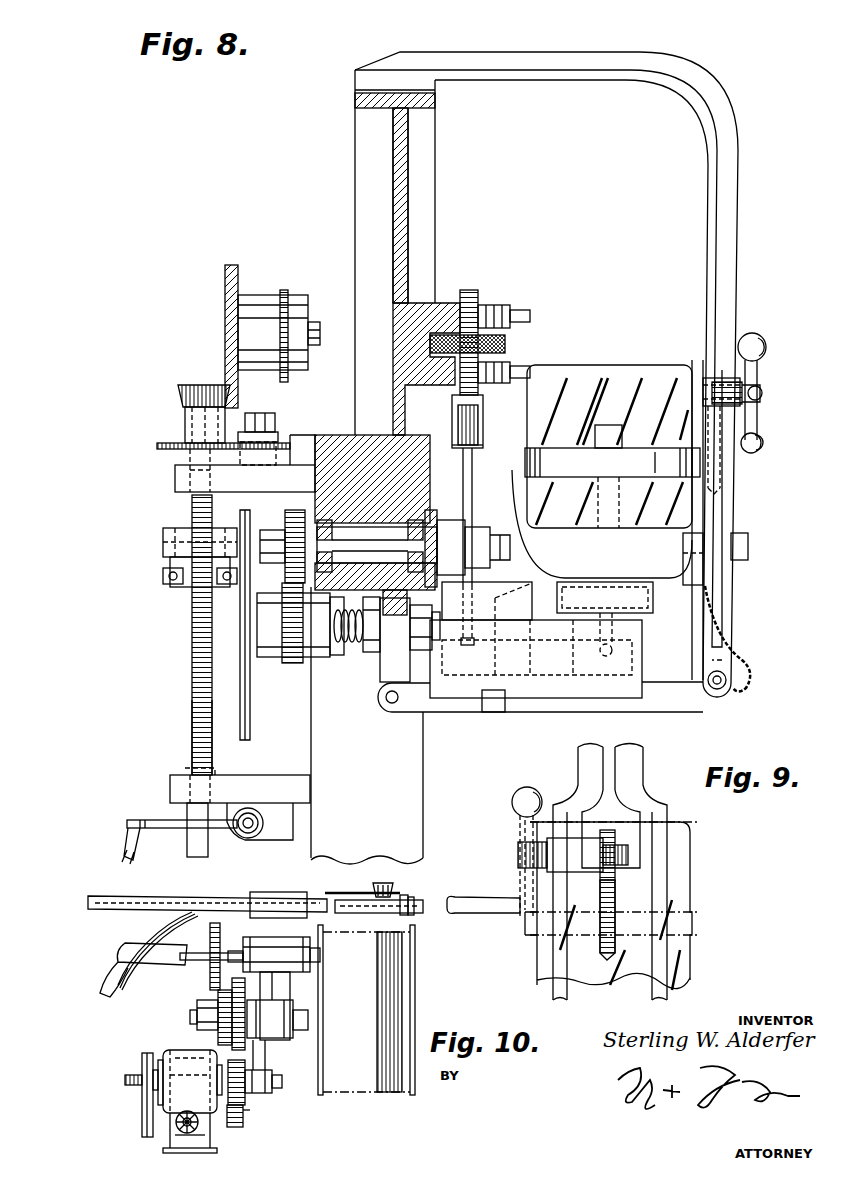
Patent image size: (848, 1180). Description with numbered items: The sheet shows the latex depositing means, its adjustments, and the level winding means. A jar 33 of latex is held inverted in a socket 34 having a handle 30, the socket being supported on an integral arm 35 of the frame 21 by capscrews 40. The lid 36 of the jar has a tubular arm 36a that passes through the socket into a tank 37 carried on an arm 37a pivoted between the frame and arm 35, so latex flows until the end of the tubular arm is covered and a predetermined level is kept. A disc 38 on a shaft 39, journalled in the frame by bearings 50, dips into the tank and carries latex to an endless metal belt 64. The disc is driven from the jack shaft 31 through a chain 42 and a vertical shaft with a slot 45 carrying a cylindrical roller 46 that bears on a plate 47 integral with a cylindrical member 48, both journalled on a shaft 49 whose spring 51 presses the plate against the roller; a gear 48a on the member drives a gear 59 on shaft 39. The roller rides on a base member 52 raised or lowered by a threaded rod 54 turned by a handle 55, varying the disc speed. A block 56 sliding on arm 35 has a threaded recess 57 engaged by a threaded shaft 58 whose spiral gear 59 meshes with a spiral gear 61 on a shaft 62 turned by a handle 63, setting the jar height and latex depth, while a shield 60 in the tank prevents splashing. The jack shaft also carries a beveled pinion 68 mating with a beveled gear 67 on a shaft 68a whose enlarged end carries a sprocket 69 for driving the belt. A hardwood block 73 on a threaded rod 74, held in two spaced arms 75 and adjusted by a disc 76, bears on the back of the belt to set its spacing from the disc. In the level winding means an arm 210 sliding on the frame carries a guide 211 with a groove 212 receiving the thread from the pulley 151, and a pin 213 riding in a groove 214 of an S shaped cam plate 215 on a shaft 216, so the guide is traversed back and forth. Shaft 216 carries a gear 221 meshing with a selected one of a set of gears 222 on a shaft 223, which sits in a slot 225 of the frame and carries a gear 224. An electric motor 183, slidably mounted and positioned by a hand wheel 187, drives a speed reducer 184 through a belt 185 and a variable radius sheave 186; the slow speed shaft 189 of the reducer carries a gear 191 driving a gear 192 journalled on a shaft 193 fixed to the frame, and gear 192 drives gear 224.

In FIG. 8, the frame 21 is at (356, 406).
In FIG. 8, the handle 30 is at (598, 468).
In FIG. 8, the jack shaft 31 is at (192, 625).
In FIG. 8, the jar 33 is at (640, 366).
In FIG. 8, the socket 34 is at (526, 467).
In FIG. 8, the arm 35 is at (708, 186).
In FIG. 8, the lid 36 is at (654, 612).
In FIG. 8, the tubular arm 36a is at (595, 642).
In FIG. 8, the tank 37 is at (514, 623).
In FIG. 8, the arm 37a is at (558, 714).
In FIG. 8, the disc 38 is at (474, 470).
In FIG. 8, the shaft 39 is at (362, 545).
In FIG. 8, the capscrews 40 is at (749, 549).
In FIG. 8, the chain 42 is at (177, 468).
In FIG. 8, the slot 45 is at (160, 444).
In FIG. 8, the cylindrical roller 46 is at (163, 548).
In FIG. 8, the plate 47 is at (250, 718).
In FIG. 8, the cylindrical member 48 is at (262, 658).
In FIG. 8, the gear 48a is at (298, 664).
In FIG. 8, the shaft 49 is at (360, 645).
In FIG. 8, the bearings 50 is at (418, 522).
In FIG. 8, the spring 51 is at (352, 645).
In FIG. 8, the base member 52 is at (165, 576).
In FIG. 8, the rod 54 is at (192, 665).
In FIG. 8, the handle 55 is at (130, 818).
In FIG. 9, the block 56 is at (655, 903).
In FIG. 9, the threaded recess 57 is at (605, 978).
In FIG. 8, the threaded shaft 58 is at (747, 450).
In FIG. 8, the gear 59 is at (287, 520).
In FIG. 8, the shield 60 is at (532, 584).
In FIG. 8, the spiral gear 61 is at (760, 384).
In FIG. 9, the spiral gear 61 is at (600, 866).
In FIG. 8, the shaft 62 is at (763, 396).
In FIG. 9, the shaft 62 is at (590, 850).
In FIG. 8, the handle 63 is at (762, 442).
In FIG. 9, the handle 63 is at (502, 897).
In FIG. 8, the endless metal belt 64 is at (480, 446).
In FIG. 8, the beveled gear 67 is at (225, 270).
In FIG. 8, the beveled pinion 68 is at (180, 396).
In FIG. 8, the shaft 68a is at (316, 322).
In FIG. 8, the sprocket 69 is at (283, 290).
In FIG. 8, the hardwood block 73 is at (456, 440).
In FIG. 8, the threaded rod 74 is at (490, 304).
In FIG. 8, the arms 75 is at (462, 300).
In FIG. 8, the disc 76 is at (506, 344).
In FIG. 10, the pulley 151 is at (374, 888).
In FIG. 10, the electric motor 183 is at (192, 1050).
In FIG. 10, the speed reducer 184 is at (208, 1132).
In FIG. 10, the belt 185 is at (150, 1125).
In FIG. 10, the sheave 186 is at (146, 1058).
In FIG. 10, the hand wheel 187 is at (178, 1130).
In FIG. 10, the shaft 189 is at (242, 1132).
In FIG. 10, the gear 191 is at (244, 1120).
In FIG. 10, the gear 192 is at (246, 1096).
In FIG. 10, the shaft 193 is at (272, 1054).
In FIG. 10, the arm 210 is at (389, 899).
In FIG. 10, the guide 211 is at (413, 896).
In FIG. 10, the groove 212 is at (405, 894).
In FIG. 10, the pin 213 is at (208, 896).
In FIG. 10, the groove 214 is at (160, 922).
In FIG. 10, the cam plate 215 is at (112, 970).
In FIG. 10, the shaft 216 is at (196, 961).
In FIG. 10, the gear 221 is at (208, 990).
In FIG. 10, the set of gears 222 is at (218, 1036).
In FIG. 10, the shaft 223 is at (197, 1014).
In FIG. 10, the gear 224 is at (246, 1030).
In FIG. 10, the slot 225 is at (280, 1000).